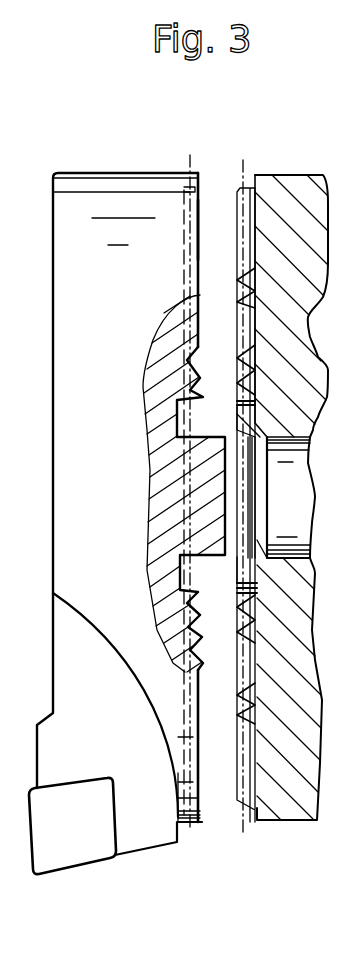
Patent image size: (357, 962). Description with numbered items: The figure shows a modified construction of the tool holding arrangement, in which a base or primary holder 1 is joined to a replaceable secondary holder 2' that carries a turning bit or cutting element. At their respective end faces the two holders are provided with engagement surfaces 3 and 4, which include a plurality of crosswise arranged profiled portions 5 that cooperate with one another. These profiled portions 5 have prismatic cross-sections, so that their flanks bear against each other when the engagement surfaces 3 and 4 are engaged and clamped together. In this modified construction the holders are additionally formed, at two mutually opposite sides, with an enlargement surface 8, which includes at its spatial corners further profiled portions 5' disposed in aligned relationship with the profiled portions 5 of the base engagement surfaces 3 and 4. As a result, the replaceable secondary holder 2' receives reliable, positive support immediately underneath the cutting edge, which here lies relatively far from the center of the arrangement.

The primary holder 1 is at (323, 210).
The replaceable secondary holder 2' is at (110, 523).
The engagement surface 3 is at (238, 647).
The engagement surface 4 is at (203, 397).
The profiled portions 5 is at (228, 496).
The further profiled portions 5' is at (231, 511).
The enlargement surface 8 is at (200, 255).